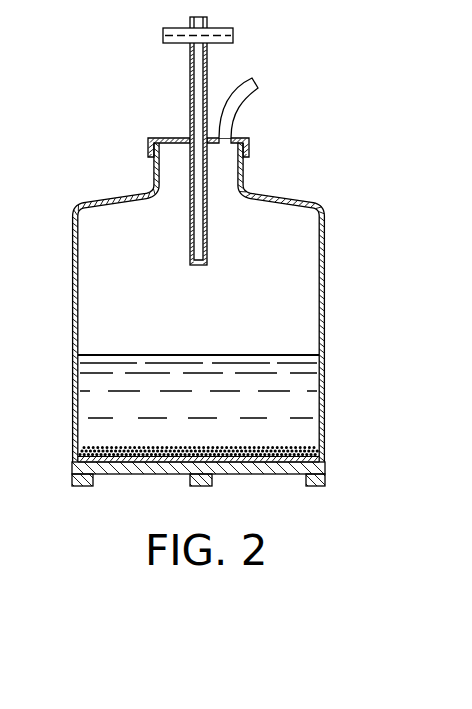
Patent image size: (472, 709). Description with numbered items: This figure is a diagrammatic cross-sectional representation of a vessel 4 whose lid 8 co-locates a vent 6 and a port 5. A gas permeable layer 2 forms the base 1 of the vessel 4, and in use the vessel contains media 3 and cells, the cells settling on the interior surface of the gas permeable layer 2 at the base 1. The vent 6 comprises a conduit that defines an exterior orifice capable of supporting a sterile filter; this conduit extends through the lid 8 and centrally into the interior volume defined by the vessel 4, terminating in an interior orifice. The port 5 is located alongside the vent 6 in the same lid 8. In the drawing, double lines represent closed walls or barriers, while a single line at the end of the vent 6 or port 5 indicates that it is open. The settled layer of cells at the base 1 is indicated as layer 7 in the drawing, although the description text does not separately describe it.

The container apparatus 1 is at (209, 286).
The bottom plate 2 is at (326, 468).
The liquid 3 is at (308, 403).
The container body 4 is at (325, 237).
The inlet pipe 5 is at (238, 108).
The central tube 6 is at (190, 80).
The granular layer 7 is at (90, 447).
The cap 8 is at (148, 140).